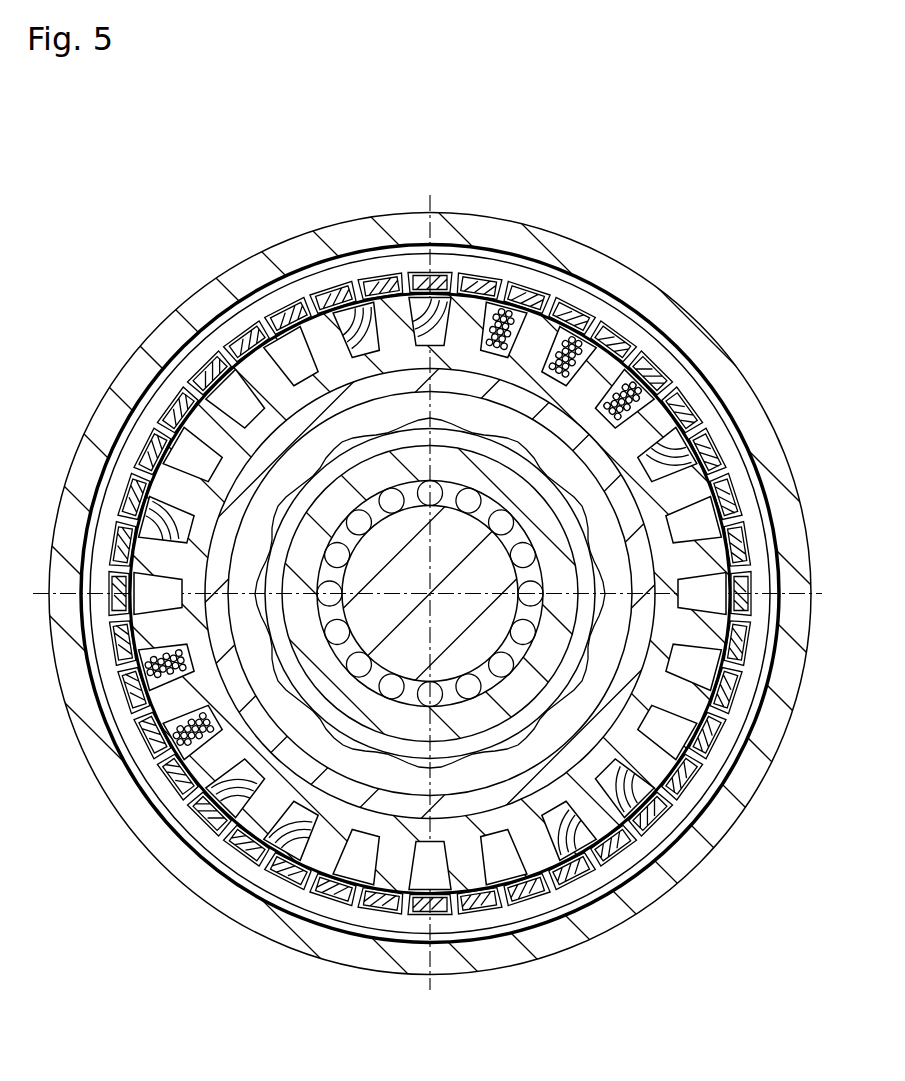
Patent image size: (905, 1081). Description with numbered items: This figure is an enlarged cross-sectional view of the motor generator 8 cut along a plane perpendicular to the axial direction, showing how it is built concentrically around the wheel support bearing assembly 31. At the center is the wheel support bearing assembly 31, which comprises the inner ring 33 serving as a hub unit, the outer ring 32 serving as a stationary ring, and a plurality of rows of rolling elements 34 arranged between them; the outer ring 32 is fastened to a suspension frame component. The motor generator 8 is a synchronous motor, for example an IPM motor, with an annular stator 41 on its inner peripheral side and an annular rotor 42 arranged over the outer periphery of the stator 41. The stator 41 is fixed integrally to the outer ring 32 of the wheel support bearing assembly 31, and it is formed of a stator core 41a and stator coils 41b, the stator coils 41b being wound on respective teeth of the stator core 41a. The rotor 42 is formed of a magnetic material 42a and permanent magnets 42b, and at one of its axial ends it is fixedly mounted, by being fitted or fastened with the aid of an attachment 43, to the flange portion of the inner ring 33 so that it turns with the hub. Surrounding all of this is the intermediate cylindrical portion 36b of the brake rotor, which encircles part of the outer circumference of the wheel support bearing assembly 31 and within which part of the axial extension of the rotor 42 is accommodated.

The intermediate cylindrical portion 36b is at (400, 227).
The attachment 43 is at (535, 268).
The rotor 42 is at (430, 611).
The magnetic material 42a is at (317, 905).
The permanent magnets 42b is at (272, 873).
The stator 41 is at (452, 540).
The stator core 41a is at (163, 708).
The stator coils 41b is at (180, 683).
The motor generator 8 is at (452, 540).
The wheel support bearing assembly 31 is at (452, 540).
The outer ring 32 is at (522, 688).
The inner ring 33 is at (452, 663).
The rolling elements 34 is at (485, 680).